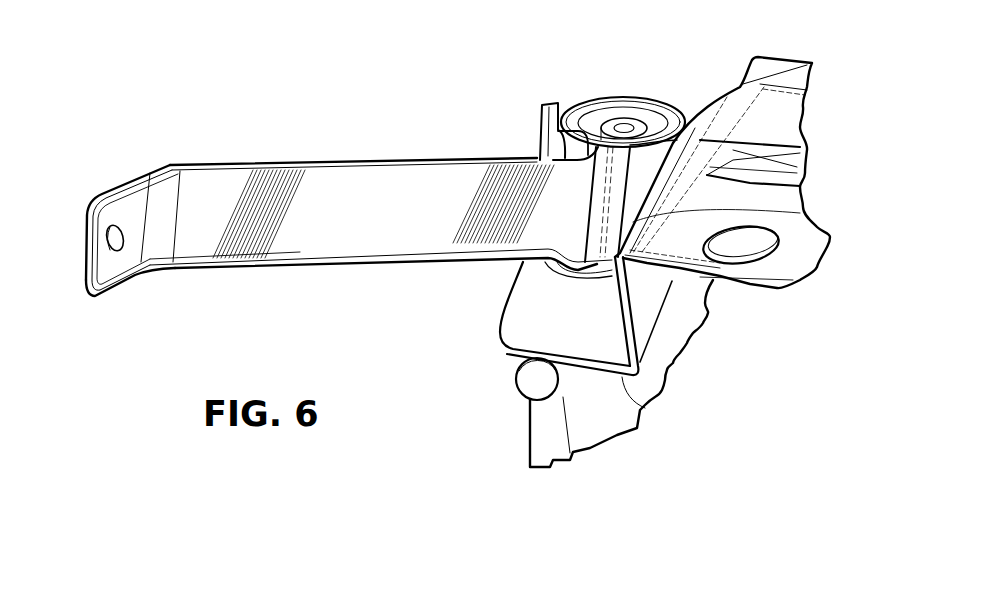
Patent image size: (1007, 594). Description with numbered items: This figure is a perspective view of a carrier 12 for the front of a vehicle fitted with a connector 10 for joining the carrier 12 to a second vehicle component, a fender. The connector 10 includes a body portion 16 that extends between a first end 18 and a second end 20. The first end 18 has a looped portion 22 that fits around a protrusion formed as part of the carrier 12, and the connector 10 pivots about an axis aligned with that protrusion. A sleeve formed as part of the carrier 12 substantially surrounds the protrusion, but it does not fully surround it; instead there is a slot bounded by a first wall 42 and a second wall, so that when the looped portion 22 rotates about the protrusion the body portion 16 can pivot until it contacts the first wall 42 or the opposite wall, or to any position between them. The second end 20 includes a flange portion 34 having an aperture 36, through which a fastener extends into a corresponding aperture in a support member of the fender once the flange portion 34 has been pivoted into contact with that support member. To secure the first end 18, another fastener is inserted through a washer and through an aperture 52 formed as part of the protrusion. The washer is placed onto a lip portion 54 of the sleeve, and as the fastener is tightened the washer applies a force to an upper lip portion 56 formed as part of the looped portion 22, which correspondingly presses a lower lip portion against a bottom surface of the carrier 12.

The connector 10 is at (328, 139).
The carrier 12 is at (535, 329).
The body portion 16 is at (410, 188).
The first end 18 is at (648, 90).
The second end 20 is at (110, 184).
The looped portion 22 is at (597, 210).
The flange portion 34 is at (93, 297).
The aperture 36 is at (117, 243).
The first wall 42 is at (547, 140).
The aperture 52 is at (620, 127).
The lip portion 54 is at (575, 115).
The upper lip portion 56 is at (597, 123).